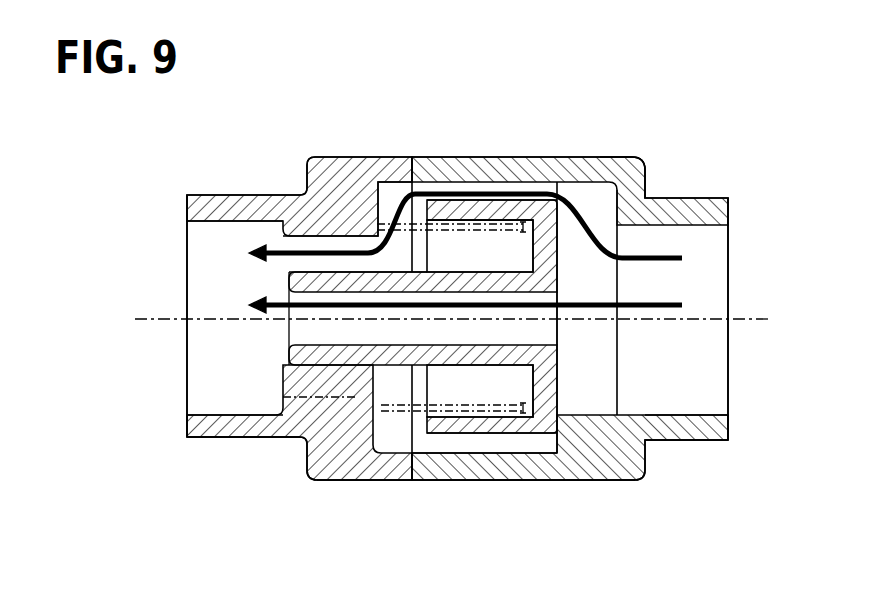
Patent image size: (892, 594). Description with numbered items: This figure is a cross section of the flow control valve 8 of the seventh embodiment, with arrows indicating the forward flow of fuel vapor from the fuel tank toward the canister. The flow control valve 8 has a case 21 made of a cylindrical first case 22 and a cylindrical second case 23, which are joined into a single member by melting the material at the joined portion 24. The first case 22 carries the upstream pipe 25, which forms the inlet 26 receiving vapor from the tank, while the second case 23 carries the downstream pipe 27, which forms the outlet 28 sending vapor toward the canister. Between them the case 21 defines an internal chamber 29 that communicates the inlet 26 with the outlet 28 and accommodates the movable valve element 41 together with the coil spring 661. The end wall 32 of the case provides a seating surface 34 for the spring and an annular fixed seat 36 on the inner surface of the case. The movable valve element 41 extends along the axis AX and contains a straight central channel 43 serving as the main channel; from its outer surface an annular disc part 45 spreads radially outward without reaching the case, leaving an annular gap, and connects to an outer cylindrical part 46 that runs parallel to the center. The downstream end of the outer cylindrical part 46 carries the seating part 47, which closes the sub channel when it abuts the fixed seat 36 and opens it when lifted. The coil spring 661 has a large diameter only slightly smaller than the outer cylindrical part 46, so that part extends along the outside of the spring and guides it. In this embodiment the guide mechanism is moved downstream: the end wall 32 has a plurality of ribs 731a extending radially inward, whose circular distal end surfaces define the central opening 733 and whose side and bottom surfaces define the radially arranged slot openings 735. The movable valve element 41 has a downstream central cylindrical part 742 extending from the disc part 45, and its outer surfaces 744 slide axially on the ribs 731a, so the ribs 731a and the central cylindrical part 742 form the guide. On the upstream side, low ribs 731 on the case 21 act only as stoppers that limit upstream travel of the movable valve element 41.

The flow control valve 8 is at (744, 144).
The case 21 is at (646, 196).
The first case 22 is at (463, 481).
The second case 23 is at (390, 481).
The joined portion 24 is at (417, 481).
The upstream pipe 25 is at (700, 441).
The inlet 26 is at (675, 388).
The downstream pipe 27 is at (237, 438).
The outlet 28 is at (233, 388).
The internal chamber 29 is at (487, 443).
The end wall 32 is at (288, 345).
The seating surface 34 is at (365, 220).
The fixed seat 36 is at (395, 263).
The movable valve element 41 is at (610, 163).
The central channel 43 is at (557, 293).
The disc part 45 is at (557, 183).
The outer cylindrical part 46 is at (520, 200).
The seating part 47 is at (414, 190).
The coil spring 661 is at (381, 405).
The ribs 731 is at (580, 454).
The ribs 731a is at (317, 375).
The opening 733 is at (286, 306).
The openings 735 is at (297, 245).
The central cylindrical part 742 is at (481, 268).
The outer surfaces 744 is at (380, 270).
The axis AX is at (745, 322).